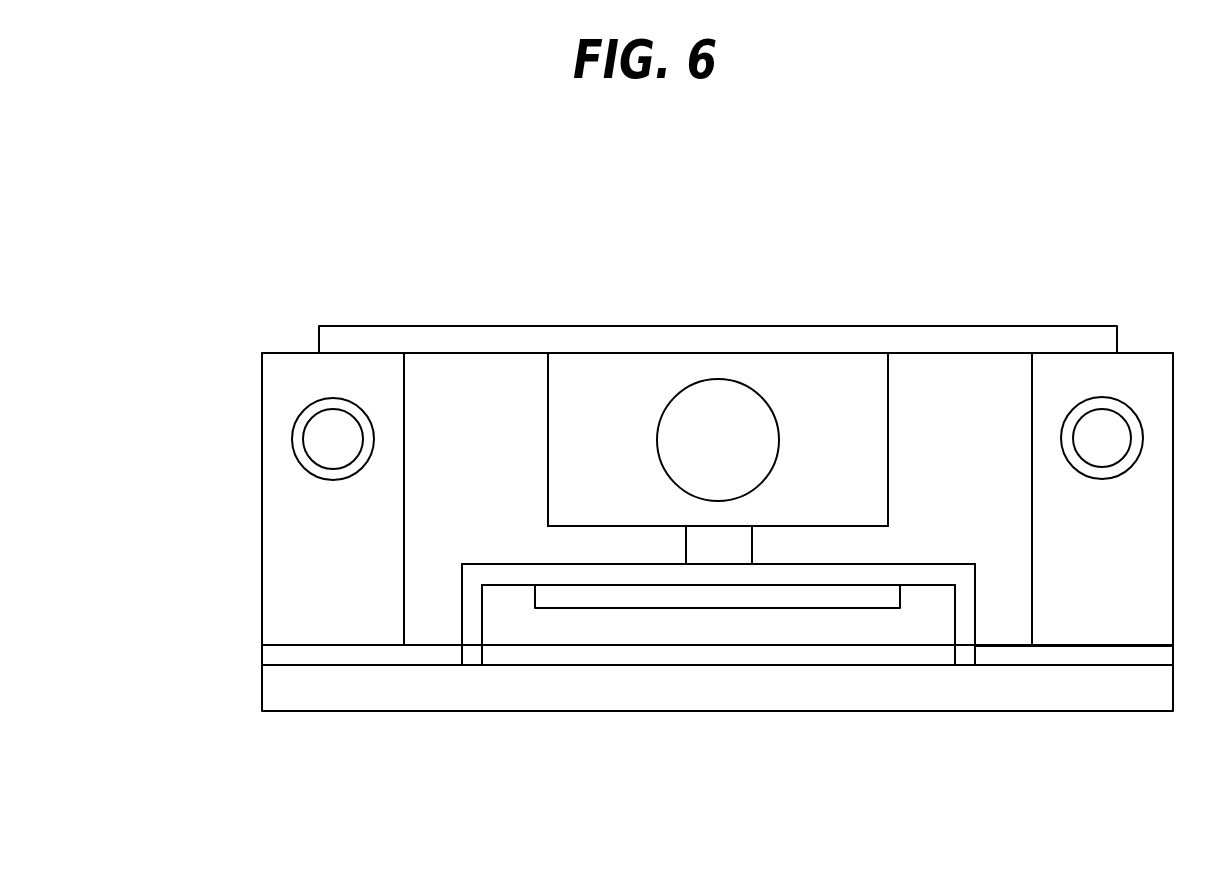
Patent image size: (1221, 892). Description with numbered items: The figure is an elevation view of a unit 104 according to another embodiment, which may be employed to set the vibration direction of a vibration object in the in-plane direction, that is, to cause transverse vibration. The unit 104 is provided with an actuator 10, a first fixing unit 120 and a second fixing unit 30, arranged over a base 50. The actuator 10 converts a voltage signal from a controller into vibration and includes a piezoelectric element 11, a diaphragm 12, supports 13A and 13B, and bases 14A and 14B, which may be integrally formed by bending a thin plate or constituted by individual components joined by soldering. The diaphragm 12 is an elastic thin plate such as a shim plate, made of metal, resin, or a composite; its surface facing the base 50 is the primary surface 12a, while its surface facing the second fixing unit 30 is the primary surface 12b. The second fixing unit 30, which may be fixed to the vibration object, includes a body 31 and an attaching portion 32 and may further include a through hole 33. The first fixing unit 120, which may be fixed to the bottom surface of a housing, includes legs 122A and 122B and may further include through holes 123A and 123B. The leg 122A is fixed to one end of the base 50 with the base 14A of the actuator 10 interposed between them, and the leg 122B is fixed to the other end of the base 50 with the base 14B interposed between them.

The unit 104 is at (223, 277).
The base 50 is at (290, 687).
The first fixing unit 120 is at (447, 253).
The leg 122A is at (383, 396).
The through hole 123A is at (332, 422).
The leg 122B is at (1052, 385).
The through hole 123B is at (1103, 428).
The second fixing unit 30 is at (805, 253).
The body 31 is at (783, 375).
The attaching portion 32 is at (718, 543).
The through hole 33 is at (683, 390).
The actuator 10 is at (360, 788).
The piezoelectric element 11 is at (728, 602).
The diaphragm 12 is at (843, 572).
The primary surface 12a is at (503, 586).
The primary surface 12b is at (507, 563).
The support 13A is at (475, 623).
The support 13B is at (962, 612).
The base 14A is at (382, 655).
The base 14B is at (1008, 657).